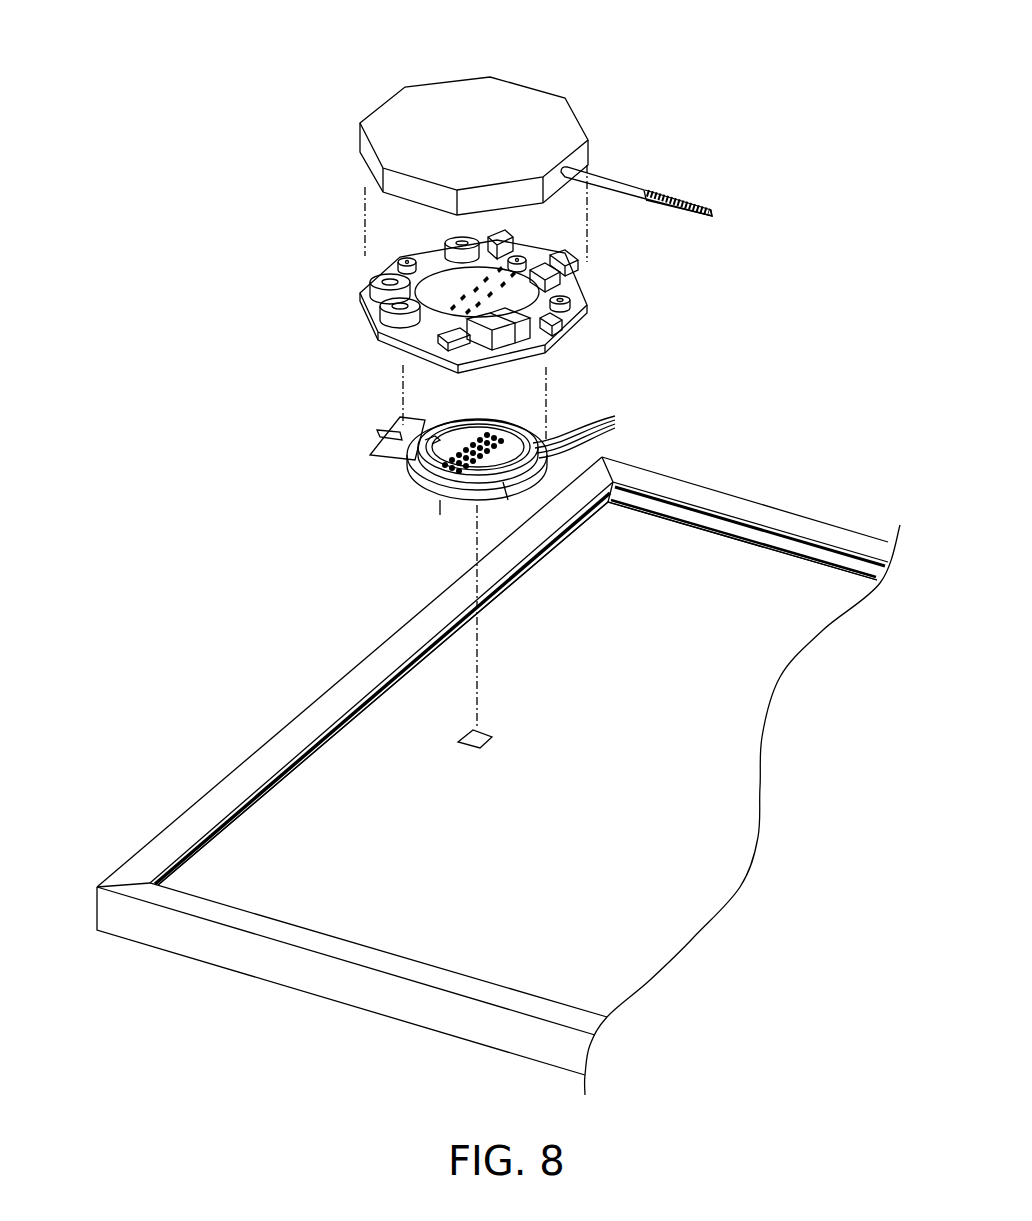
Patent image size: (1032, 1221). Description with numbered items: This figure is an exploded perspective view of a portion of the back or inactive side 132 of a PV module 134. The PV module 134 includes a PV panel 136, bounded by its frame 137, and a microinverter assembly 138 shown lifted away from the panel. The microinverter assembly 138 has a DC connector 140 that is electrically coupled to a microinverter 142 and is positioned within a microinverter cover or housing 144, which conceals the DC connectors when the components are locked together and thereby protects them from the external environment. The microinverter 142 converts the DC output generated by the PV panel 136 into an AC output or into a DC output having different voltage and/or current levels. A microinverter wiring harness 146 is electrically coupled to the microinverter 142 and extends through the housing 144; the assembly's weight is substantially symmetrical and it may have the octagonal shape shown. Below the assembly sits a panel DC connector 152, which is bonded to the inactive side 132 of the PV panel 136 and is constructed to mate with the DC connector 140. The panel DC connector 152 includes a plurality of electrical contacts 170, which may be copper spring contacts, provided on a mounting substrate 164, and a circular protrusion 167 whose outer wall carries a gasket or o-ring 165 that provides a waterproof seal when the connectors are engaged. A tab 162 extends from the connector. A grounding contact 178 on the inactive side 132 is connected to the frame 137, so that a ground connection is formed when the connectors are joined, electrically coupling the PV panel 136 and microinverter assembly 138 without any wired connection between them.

The inactive side 132 is at (413, 912).
The PV module 134 is at (828, 485).
The PV panel 136 is at (178, 955).
The frame 137 is at (192, 826).
The microinverter assembly 138 is at (310, 223).
The DC connector 140 is at (392, 362).
The microinverter 142 is at (372, 317).
The microinverter cover or housing 144 is at (522, 108).
The microinverter wiring harness 146 is at (604, 178).
The panel DC connector 152 is at (447, 493).
The connector tab 162 is at (408, 440).
The mounting substrate 164 is at (390, 447).
The gasket or o-ring 165 is at (508, 500).
The circular protrusion 167 is at (513, 427).
The electrical contacts 170 is at (595, 434).
The grounding contact 178 is at (483, 740).